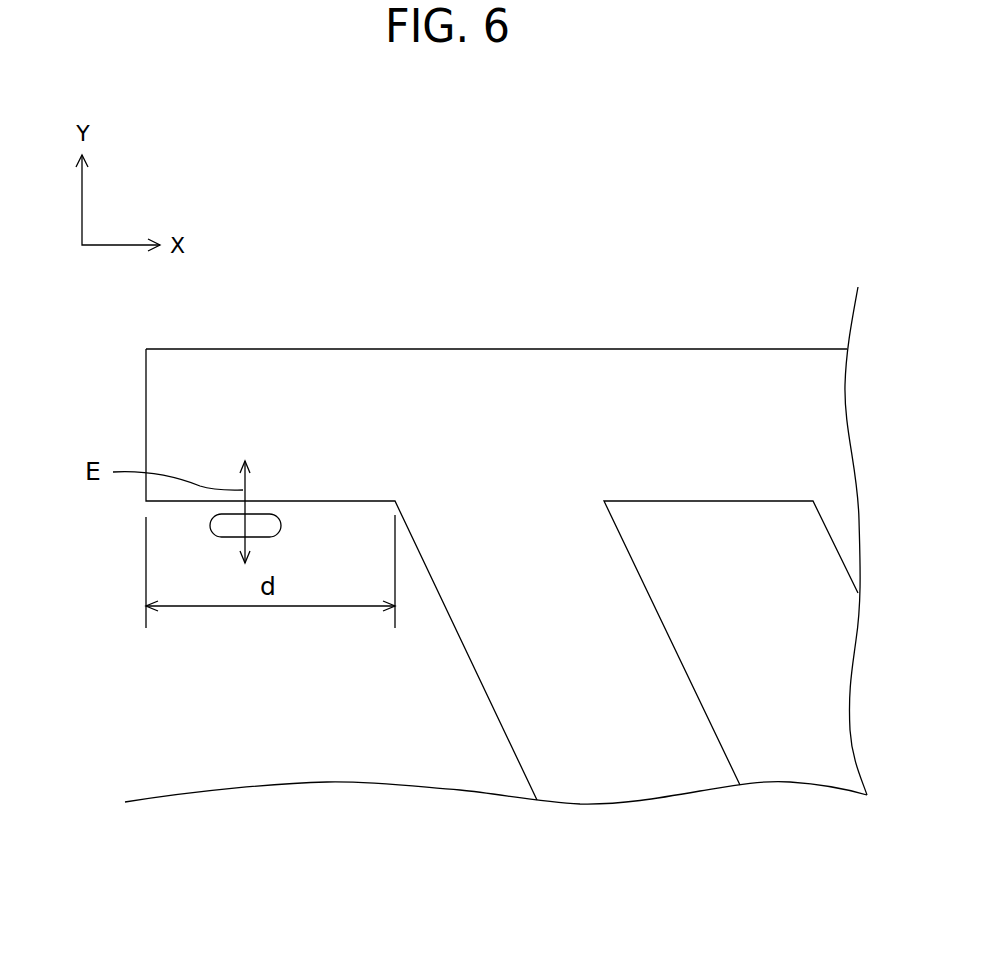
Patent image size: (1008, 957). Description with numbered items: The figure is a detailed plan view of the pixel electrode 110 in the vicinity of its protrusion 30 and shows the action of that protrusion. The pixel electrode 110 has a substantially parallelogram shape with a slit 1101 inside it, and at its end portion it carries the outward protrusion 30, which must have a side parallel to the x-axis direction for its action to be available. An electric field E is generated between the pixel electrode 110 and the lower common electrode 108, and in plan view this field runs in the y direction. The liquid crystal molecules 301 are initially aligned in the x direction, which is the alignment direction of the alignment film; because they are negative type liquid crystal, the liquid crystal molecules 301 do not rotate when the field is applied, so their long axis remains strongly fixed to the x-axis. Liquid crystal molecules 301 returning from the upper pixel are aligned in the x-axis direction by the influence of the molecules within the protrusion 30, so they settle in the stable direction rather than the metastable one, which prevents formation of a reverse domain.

The protrusion 30 is at (170, 412).
The pixel electrode 110 is at (597, 378).
The slit 1101 is at (713, 550).
The common electrode 108 is at (335, 628).
The liquid crystal molecules 301 is at (210, 528).